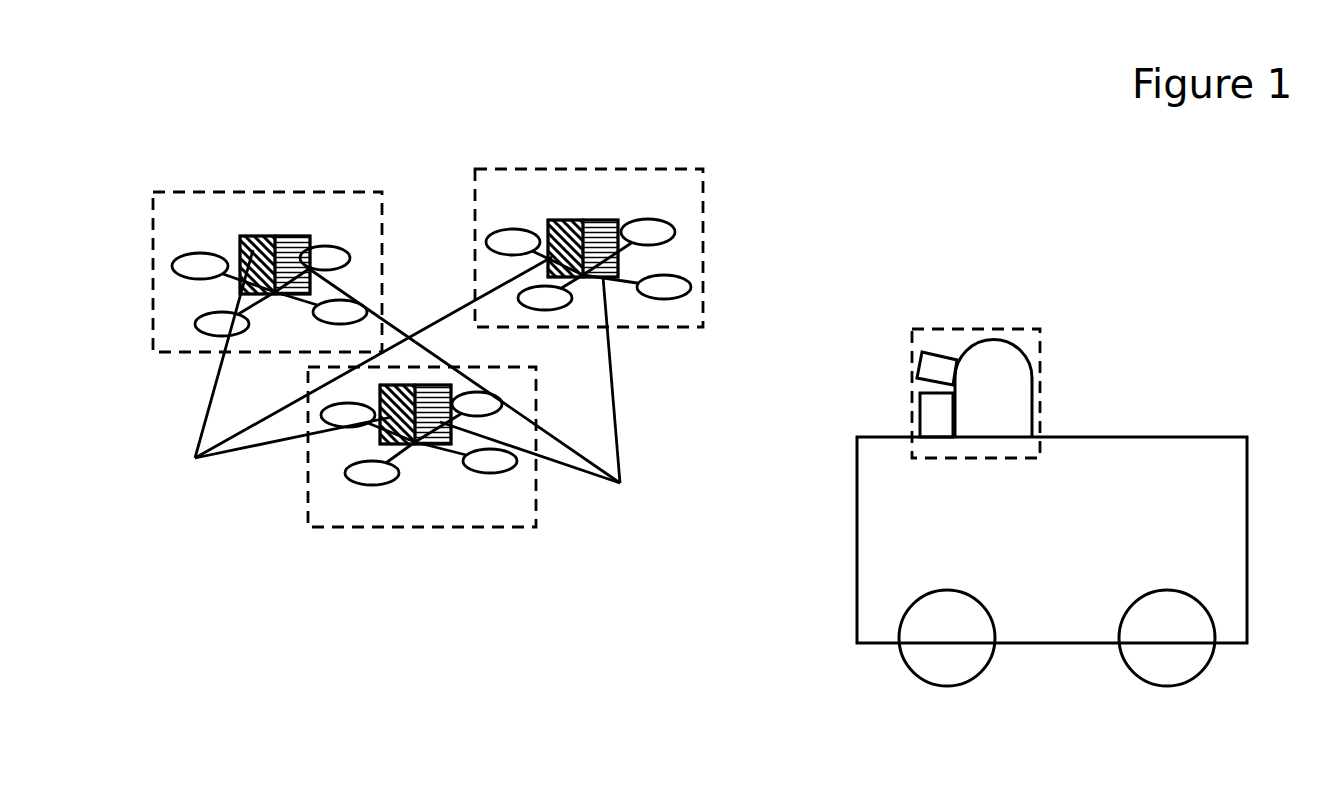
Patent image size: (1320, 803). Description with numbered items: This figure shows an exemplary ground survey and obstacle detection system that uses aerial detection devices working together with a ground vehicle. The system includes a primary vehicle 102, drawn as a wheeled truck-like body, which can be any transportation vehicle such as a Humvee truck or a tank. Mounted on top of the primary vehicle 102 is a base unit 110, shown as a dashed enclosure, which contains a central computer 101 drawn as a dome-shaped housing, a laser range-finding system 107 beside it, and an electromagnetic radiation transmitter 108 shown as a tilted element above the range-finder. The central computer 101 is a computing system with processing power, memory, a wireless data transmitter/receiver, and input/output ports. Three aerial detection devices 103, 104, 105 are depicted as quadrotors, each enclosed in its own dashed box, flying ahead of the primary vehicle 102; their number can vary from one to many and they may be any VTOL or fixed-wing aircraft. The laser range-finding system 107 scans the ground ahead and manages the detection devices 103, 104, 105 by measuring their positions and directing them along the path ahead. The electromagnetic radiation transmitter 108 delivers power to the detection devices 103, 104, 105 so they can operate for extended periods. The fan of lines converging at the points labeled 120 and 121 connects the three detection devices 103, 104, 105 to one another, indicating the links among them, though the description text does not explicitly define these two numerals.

The central computer 101 is at (998, 393).
The primary vehicle 102 is at (1018, 561).
The aerial detection device 103 is at (573, 168).
The aerial detection device 104 is at (267, 192).
The aerial detection device 105 is at (435, 527).
The laser range-finding system 107 is at (938, 422).
The electromagnetic radiation transmitter 108 is at (938, 370).
The base unit 110 is at (1043, 328).
The communication links from first point 120 is at (353, 380).
The communication links from second point 121 is at (485, 396).